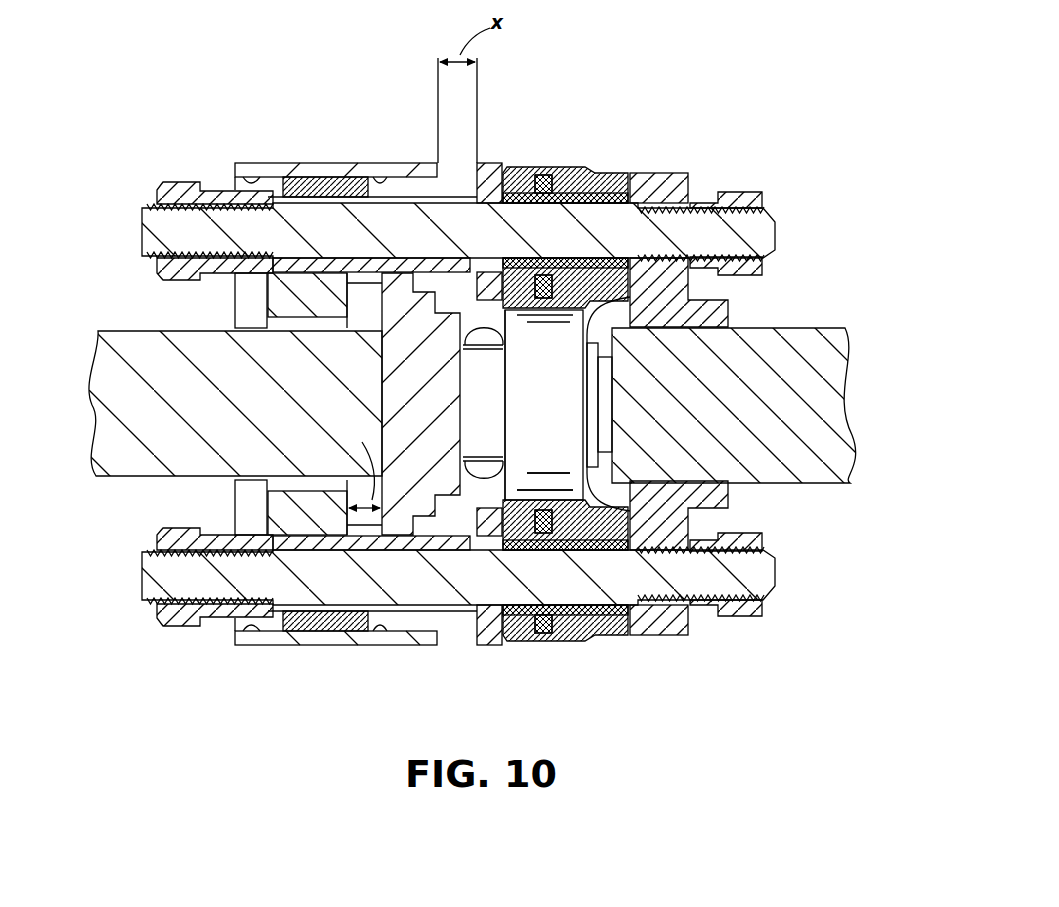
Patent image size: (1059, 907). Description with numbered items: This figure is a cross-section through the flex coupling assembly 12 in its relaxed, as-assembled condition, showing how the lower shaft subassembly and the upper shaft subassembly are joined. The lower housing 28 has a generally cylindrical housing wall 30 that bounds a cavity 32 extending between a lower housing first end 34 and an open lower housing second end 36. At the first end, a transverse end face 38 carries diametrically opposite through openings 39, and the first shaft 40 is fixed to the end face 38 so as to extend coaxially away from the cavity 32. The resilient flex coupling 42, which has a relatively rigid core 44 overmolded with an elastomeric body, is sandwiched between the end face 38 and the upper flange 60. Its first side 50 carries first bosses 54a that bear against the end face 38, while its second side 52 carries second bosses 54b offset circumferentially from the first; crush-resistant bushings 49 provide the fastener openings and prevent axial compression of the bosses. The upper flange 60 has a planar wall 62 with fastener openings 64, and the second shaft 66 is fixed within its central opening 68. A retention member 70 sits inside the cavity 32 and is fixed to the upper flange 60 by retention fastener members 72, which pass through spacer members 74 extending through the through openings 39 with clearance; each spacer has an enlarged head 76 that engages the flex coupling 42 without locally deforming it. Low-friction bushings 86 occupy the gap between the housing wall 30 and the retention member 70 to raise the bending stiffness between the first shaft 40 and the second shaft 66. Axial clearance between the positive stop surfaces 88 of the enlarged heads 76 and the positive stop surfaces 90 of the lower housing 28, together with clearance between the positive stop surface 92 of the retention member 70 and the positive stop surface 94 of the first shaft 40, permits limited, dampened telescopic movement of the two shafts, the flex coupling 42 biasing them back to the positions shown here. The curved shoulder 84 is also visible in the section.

The flex coupling assembly 12 is at (706, 104).
The lower housing 28 is at (386, 149).
The housing wall 30 is at (345, 163).
The cavity 32 is at (204, 515).
The lower housing first end 34 is at (505, 345).
The lower housing second end 36 is at (235, 313).
The end face 38 is at (505, 455).
The through openings 39 is at (262, 178).
The first shaft 40 is at (120, 331).
The resilient flex coupling 42 is at (536, 176).
The core 44 is at (565, 180).
The bushings 49 is at (517, 205).
The first side 50 is at (497, 420).
The second side 52 is at (598, 410).
The first bosses 54a is at (505, 375).
The second bosses 54b is at (600, 170).
The upper flange 60 is at (689, 171).
The planar wall 62 is at (650, 640).
The fastener openings 64 is at (655, 175).
The second shaft 66 is at (800, 327).
The central opening 68 is at (715, 470).
The retention member 70 is at (261, 500).
The retention fastener members 72 is at (143, 225).
The spacer members 74 is at (480, 200).
The enlarged head 76 is at (505, 170).
The curved shoulder 84 is at (587, 330).
The bushings 86 is at (310, 178).
The positive stop surfaces 88 is at (450, 272).
The positive stop surfaces 90 is at (446, 205).
The positive stop surface 92 is at (352, 322).
The positive stop surface 94 is at (366, 303).